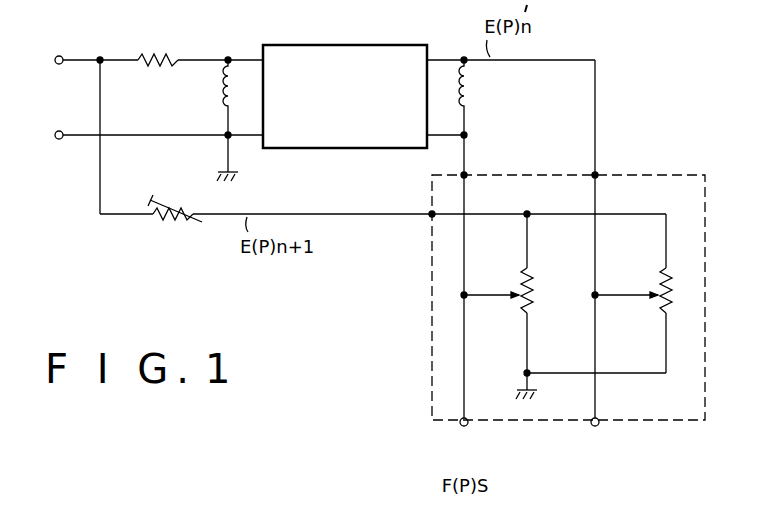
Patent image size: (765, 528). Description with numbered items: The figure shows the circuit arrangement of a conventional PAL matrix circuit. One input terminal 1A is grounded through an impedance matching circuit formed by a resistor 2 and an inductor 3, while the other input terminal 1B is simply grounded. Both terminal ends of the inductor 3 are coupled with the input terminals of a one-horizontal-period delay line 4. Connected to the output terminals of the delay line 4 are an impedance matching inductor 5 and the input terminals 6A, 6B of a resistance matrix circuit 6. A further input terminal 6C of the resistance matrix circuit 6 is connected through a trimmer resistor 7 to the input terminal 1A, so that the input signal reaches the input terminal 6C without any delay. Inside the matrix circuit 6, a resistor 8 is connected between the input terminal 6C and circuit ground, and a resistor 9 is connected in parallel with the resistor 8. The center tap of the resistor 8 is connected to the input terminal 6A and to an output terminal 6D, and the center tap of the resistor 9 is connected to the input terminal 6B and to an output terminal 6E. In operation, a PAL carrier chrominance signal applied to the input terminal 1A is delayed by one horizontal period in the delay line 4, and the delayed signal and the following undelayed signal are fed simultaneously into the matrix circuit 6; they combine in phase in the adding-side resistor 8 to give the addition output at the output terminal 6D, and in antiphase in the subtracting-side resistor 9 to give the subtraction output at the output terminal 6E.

The input terminal 1A is at (57, 55).
The input terminal 1B is at (57, 130).
The resistor 2 is at (154, 50).
The inductor 3 is at (222, 100).
The 1H delay line 4 is at (340, 47).
The impedance matching inductor 5 is at (470, 96).
The resistance matrix circuit 6 is at (431, 330).
The input terminal 6A is at (598, 172).
The input terminal 6B is at (467, 172).
The input terminal 6C is at (431, 216).
The output terminal 6D is at (602, 445).
The output terminal 6E is at (466, 427).
The trimmer resistor 7 is at (174, 221).
The resistor 8 is at (660, 282).
The resistor 9 is at (538, 296).